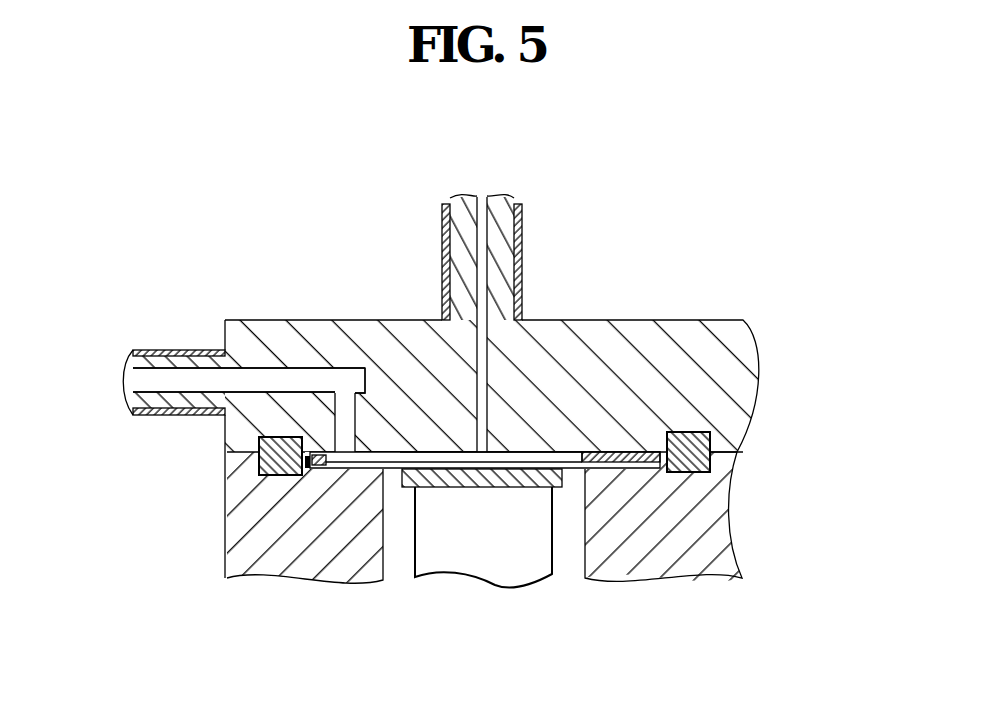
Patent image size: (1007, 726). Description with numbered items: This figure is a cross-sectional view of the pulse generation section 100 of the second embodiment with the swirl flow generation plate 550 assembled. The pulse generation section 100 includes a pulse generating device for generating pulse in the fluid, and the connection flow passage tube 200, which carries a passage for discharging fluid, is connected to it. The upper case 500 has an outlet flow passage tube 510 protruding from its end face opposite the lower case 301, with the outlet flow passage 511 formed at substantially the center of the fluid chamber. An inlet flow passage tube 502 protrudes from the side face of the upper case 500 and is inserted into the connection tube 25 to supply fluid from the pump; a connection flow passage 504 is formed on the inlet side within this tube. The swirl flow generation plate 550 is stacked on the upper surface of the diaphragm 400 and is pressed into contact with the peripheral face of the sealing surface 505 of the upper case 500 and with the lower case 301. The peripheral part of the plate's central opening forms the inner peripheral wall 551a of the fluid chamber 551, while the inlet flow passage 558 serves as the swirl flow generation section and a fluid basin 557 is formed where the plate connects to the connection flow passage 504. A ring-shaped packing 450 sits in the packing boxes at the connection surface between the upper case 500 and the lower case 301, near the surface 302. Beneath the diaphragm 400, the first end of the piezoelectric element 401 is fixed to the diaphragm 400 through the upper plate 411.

The pulse generation section 100 is at (780, 150).
The connection flow passage tube 200 is at (522, 228).
The outlet flow passage tube 510 is at (445, 213).
The outlet flow passage 511 is at (465, 240).
The upper case 500 is at (728, 318).
The inlet flow passage tube 502 is at (157, 353).
The connection flow passage 504 is at (203, 380).
The connection tube 25 is at (165, 418).
The fluid basin 557 is at (348, 420).
The inlet flow passage 558 is at (383, 452).
The sealing surface 505 is at (418, 458).
The fluid chamber 551 is at (540, 456).
The inner peripheral wall 551a is at (570, 453).
The swirl flow generation plate 550 is at (495, 447).
The lower case 301 is at (716, 543).
The mounting surface 302 is at (740, 447).
The ring-shaped packing 450 is at (712, 455).
The diaphragm 400 is at (398, 474).
The piezoelectric element 401 is at (553, 545).
The upper plate 411 is at (478, 492).